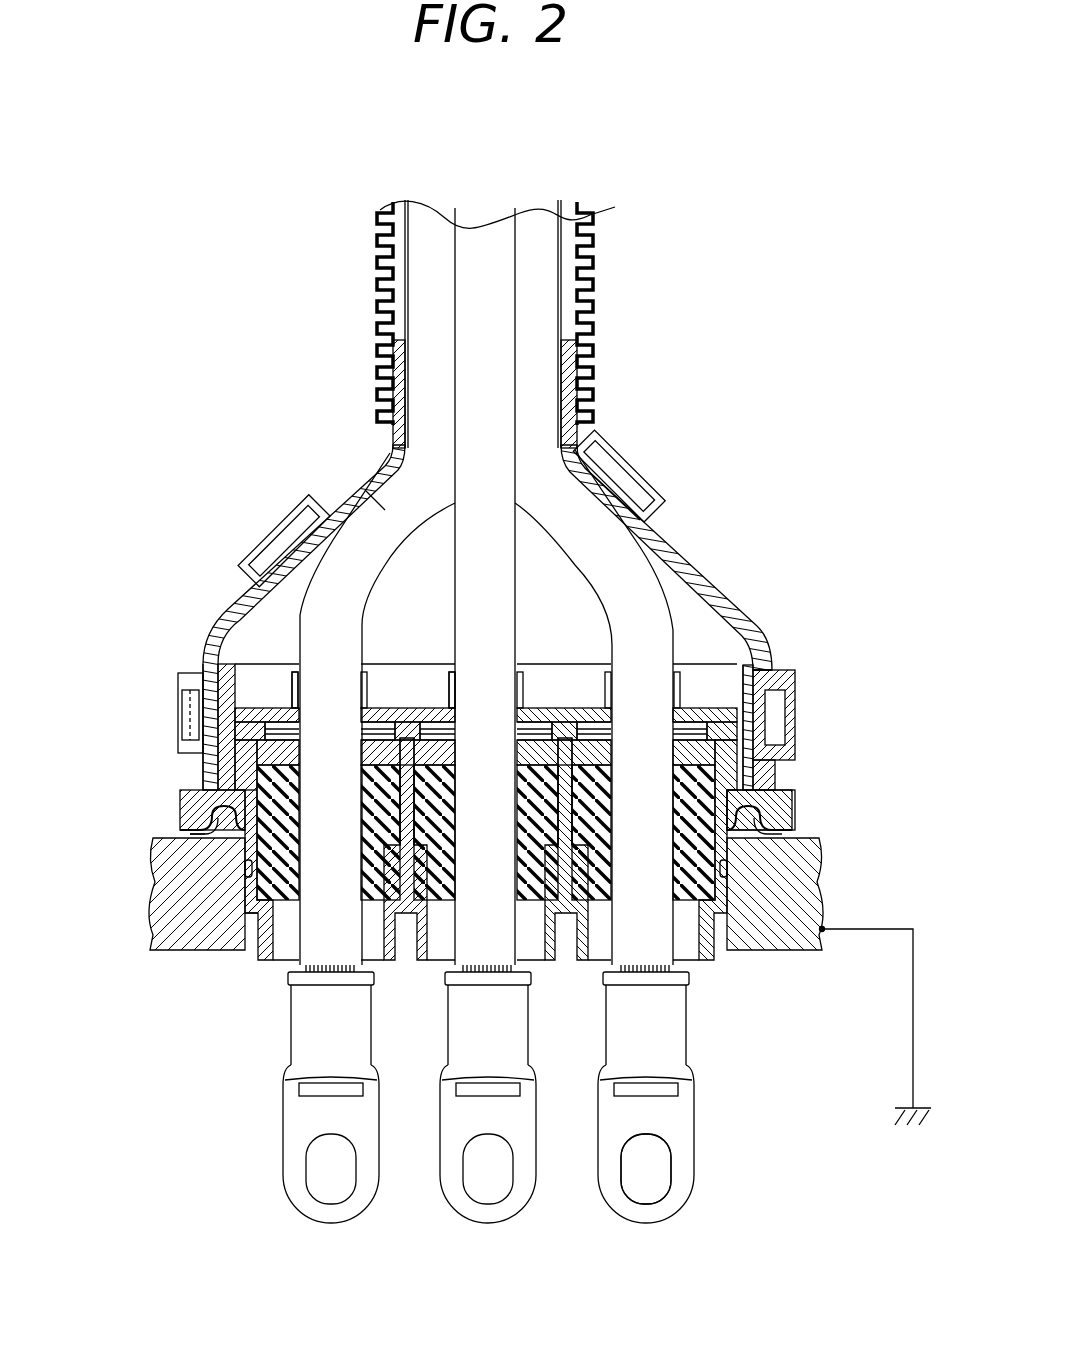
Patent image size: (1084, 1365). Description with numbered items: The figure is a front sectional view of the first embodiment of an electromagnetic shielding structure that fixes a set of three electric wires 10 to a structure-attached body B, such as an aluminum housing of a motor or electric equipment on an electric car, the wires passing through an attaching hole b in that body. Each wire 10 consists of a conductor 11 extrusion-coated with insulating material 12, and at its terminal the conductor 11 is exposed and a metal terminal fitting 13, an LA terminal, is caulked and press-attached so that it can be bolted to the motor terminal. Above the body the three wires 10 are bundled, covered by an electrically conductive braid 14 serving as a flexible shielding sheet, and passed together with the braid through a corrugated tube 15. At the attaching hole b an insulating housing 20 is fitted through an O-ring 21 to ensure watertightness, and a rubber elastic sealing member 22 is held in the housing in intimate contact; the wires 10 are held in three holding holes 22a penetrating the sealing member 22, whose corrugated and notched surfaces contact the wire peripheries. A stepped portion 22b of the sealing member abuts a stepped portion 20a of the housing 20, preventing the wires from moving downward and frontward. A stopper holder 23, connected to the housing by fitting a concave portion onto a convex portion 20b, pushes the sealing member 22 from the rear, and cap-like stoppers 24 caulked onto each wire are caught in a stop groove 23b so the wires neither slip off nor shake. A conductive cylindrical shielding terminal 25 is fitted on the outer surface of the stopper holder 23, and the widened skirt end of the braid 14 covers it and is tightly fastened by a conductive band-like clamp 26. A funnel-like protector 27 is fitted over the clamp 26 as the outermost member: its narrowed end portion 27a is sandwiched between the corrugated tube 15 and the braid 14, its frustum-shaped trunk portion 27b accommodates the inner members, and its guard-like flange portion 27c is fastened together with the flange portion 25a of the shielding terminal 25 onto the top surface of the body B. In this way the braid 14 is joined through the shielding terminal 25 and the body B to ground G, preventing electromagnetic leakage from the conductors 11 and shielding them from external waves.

The electric wires 10 is at (592, 606).
The conductor 11 is at (680, 1092).
The insulating material 12 is at (530, 233).
The metal terminal fitting 13 is at (680, 1185).
The electrically conductive braid 14 is at (280, 603).
The corrugated tube 15 is at (597, 306).
The housing 20 is at (722, 900).
The stepped portion 20a is at (565, 920).
The convex portion 20b is at (563, 740).
The O-ring 21 is at (737, 873).
The elastic sealing member 22 is at (712, 812).
The holding holes 22a is at (300, 792).
The stepped portion 22b is at (407, 920).
The stopper holder 23 is at (756, 672).
The stop groove 23b is at (282, 720).
The stopper 24 is at (452, 683).
The shielding terminal 25 is at (230, 707).
The flange portion 25a is at (790, 837).
The clamp 26 is at (217, 667).
The protector 27 is at (760, 612).
The narrowed end portion 27a is at (572, 372).
The trunk portion 27b is at (625, 500).
The flange portion 27c is at (787, 810).
The structure-attached body B is at (163, 912).
The attaching hole b is at (250, 937).
The ground G is at (888, 1027).